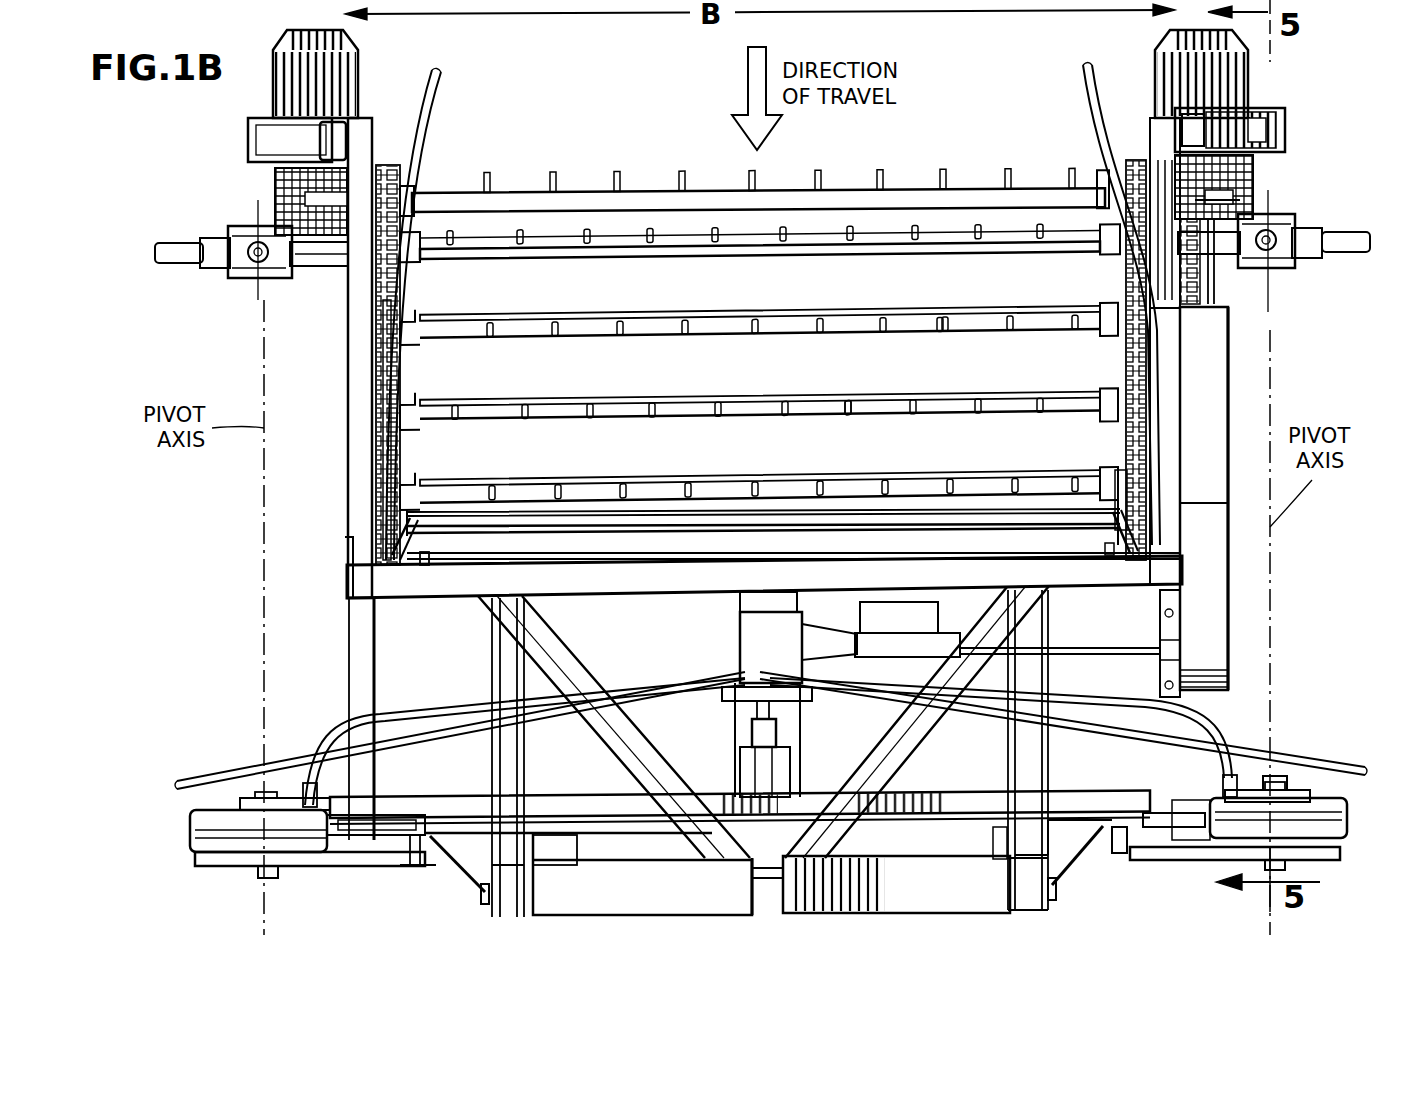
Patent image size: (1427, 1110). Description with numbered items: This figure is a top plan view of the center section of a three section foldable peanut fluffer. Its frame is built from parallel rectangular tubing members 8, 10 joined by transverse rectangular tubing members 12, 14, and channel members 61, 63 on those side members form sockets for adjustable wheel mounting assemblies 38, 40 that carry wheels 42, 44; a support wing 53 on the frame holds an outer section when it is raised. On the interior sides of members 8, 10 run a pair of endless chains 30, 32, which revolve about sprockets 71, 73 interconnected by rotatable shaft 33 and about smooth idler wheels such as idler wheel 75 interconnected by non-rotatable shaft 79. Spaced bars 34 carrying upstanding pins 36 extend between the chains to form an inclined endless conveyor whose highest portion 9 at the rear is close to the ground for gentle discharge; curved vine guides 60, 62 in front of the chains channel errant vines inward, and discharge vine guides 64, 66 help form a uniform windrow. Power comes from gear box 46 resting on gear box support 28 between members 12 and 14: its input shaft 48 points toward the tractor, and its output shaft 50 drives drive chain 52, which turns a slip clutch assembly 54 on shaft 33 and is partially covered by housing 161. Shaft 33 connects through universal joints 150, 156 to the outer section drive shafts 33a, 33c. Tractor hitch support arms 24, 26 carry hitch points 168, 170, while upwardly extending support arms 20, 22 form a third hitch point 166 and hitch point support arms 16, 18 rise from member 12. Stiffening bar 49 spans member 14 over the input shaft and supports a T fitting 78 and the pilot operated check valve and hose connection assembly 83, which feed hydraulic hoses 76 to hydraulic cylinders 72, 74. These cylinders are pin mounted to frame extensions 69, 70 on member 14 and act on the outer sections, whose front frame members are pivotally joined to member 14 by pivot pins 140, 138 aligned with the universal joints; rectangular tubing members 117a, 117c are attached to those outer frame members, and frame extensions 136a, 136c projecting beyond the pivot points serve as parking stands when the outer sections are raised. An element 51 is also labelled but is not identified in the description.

The rectangular tubing member 8 is at (355, 340).
The highest portion of the endless conveyor 9 is at (662, 188).
The rectangular tubing member 10 is at (1170, 410).
The transverse rectangular tubing member 12 is at (640, 585).
The transverse rectangular tubing member 14 is at (280, 795).
The upwardly extending hitch point support arm 16 is at (600, 730).
The upwardly extending hitch point support arm 18 is at (920, 728).
The upwardly extending support arm 20 is at (640, 872).
The upwardly extending support arm 22 is at (905, 870).
The tractor hitch support arm 24 is at (530, 770).
The tractor hitch support arm 26 is at (1005, 764).
The gear box support 28 is at (745, 605).
The endless chain 30 is at (400, 362).
The endless chain 32 is at (1125, 440).
The rotatable shaft 33 is at (740, 258).
The outer section drive shaft 33a is at (180, 250).
The outer section drive shaft 33c is at (1338, 240).
The spaced bars 34 is at (692, 403).
The upstanding pins 36 is at (940, 325).
The adjustable wheel mounting assembly 38 is at (262, 141).
The adjustable wheel mounting assembly 40 is at (1285, 120).
The wheel 42 is at (300, 92).
The wheel 44 is at (1235, 85).
The gear box 46 is at (745, 641).
The input shaft 48 is at (762, 777).
The stiffening bar 49 is at (740, 808).
The output shaft 50 is at (1102, 650).
The left sprocket guard 51 is at (320, 192).
The drive chain 52 is at (1260, 202).
The support wing 53 is at (1255, 170).
The slip clutch assembly 54 is at (1218, 278).
The vine guide 60 is at (395, 520).
The channel member 61 is at (342, 135).
The vine guide 62 is at (1110, 530).
The channel member 63 is at (1188, 110).
The discharge vine guide 64 is at (438, 92).
The discharge vine guide 66 is at (1092, 105).
The frame extension 69 is at (385, 815).
The frame extension 70 is at (1135, 485).
The sprocket 71 is at (385, 170).
The hydraulic cylinder 72 is at (200, 815).
The sprocket 73 is at (1128, 268).
The hydraulic cylinder 74 is at (1350, 810).
The idler wheel 75 is at (385, 468).
The hydraulic hoses 76 is at (465, 722).
The T fitting 78 is at (765, 690).
The non-rotatable shaft 79 is at (735, 512).
The pilot operated check valve and hose connection assembly 83 is at (776, 730).
The rectangular tubing member 117a is at (340, 868).
The rectangular tubing member 117c is at (1188, 860).
The frame extension 136a is at (435, 865).
The frame extension 136c is at (1105, 855).
The pivot pin 138 is at (1275, 776).
The pivot pin 140 is at (262, 878).
The universal joint 150 is at (250, 262).
The universal joint 156 is at (1275, 252).
The housing 161 is at (1218, 360).
The third hitch point 166 is at (748, 885).
The hitch point 168 is at (478, 903).
The hitch point 170 is at (1058, 892).